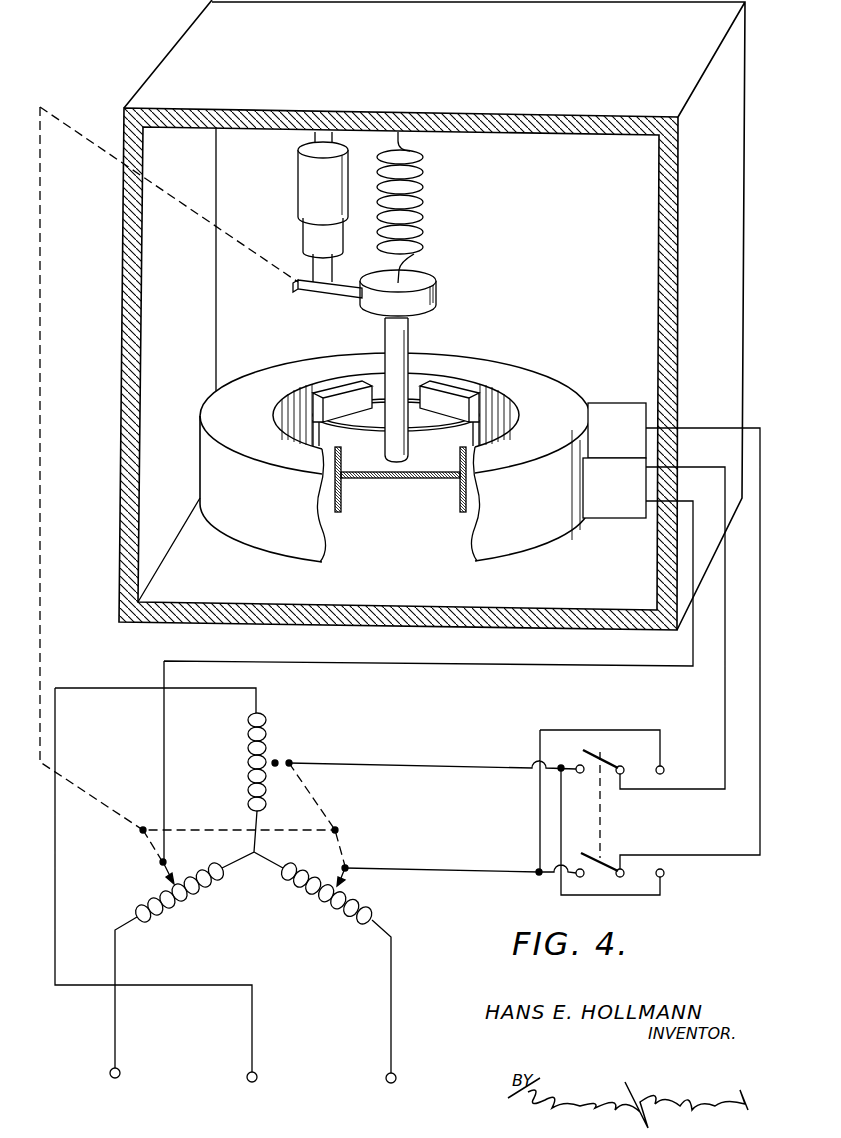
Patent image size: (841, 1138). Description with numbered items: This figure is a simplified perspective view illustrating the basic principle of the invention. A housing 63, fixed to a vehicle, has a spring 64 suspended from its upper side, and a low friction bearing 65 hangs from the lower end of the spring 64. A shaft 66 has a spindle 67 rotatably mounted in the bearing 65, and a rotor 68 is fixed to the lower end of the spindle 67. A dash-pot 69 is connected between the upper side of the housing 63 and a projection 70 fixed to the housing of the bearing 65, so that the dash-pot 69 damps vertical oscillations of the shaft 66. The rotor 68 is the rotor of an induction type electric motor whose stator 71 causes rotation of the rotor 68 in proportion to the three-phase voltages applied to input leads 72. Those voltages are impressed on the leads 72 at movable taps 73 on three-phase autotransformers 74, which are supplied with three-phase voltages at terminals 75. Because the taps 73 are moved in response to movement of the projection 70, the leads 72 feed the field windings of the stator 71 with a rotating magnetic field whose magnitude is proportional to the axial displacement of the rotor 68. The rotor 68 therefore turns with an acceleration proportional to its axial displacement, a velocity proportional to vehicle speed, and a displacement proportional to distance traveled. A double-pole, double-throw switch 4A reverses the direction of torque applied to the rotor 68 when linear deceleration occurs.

The housing 63 is at (680, 292).
The spring 64 is at (428, 193).
The low friction bearing 65 is at (438, 276).
The shaft 66 is at (410, 337).
The spindle 67 is at (385, 337).
The rotor 68 is at (418, 476).
The dash-pot 69 is at (306, 186).
The projection 70 is at (300, 290).
The stator 71 is at (423, 445).
The input leads 72 is at (449, 667).
The movable taps 73 is at (275, 761).
The three-phase autotransformers 74 is at (248, 764).
The terminals 75 is at (384, 1098).
The double-pole, double-throw switch 4A is at (631, 751).